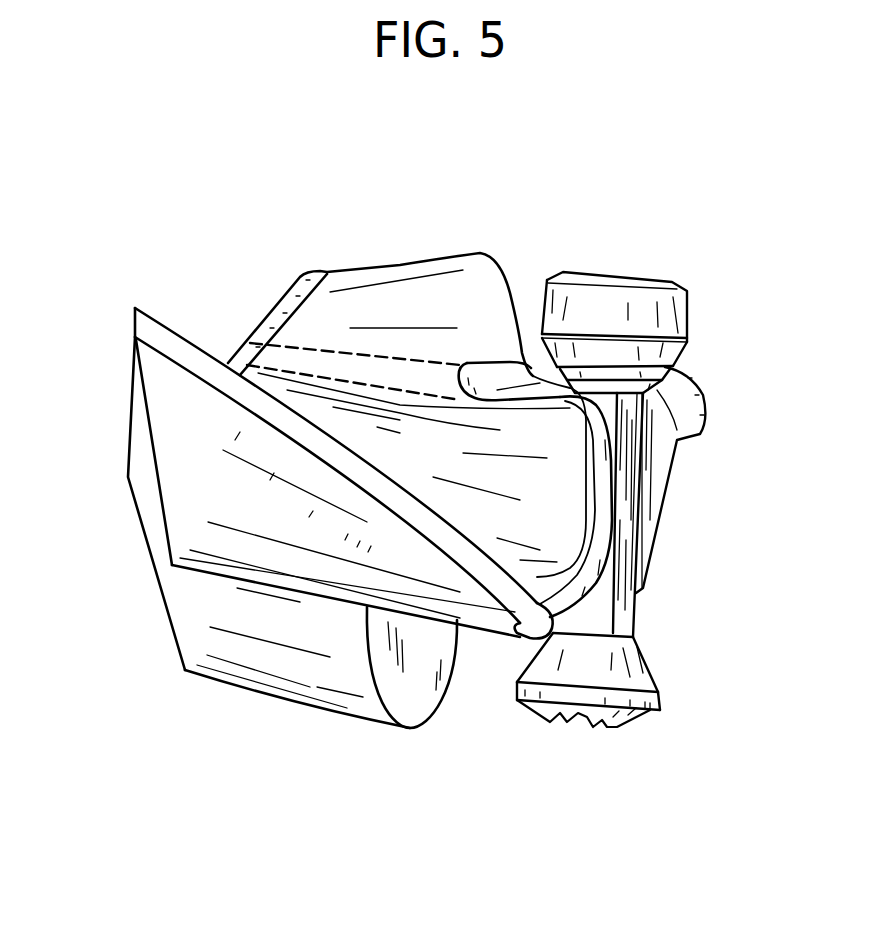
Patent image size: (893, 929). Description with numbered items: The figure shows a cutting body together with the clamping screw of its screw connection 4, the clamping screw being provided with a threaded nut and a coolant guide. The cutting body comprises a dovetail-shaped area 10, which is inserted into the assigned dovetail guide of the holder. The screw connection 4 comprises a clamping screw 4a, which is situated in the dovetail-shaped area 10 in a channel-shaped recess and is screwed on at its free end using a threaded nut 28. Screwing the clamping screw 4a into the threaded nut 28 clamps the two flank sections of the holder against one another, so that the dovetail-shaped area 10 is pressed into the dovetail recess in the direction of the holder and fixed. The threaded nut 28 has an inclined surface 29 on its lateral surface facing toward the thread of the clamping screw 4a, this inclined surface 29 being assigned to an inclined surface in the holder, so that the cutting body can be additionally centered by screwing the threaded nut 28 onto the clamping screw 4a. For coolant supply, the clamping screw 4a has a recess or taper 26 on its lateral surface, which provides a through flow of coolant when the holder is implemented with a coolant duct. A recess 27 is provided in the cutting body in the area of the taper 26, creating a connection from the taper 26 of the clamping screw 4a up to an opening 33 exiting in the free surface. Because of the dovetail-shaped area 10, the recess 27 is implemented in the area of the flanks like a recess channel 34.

The screw connection 4 is at (650, 728).
The clamping screw 4a is at (550, 708).
The dovetail-shaped area 10 is at (518, 483).
The recess or taper 26 is at (697, 405).
The recess 27 is at (373, 333).
The threaded nut 28 is at (665, 313).
The inclined surface 29 is at (618, 400).
The opening 33 is at (150, 507).
The recess channel 34 is at (536, 398).